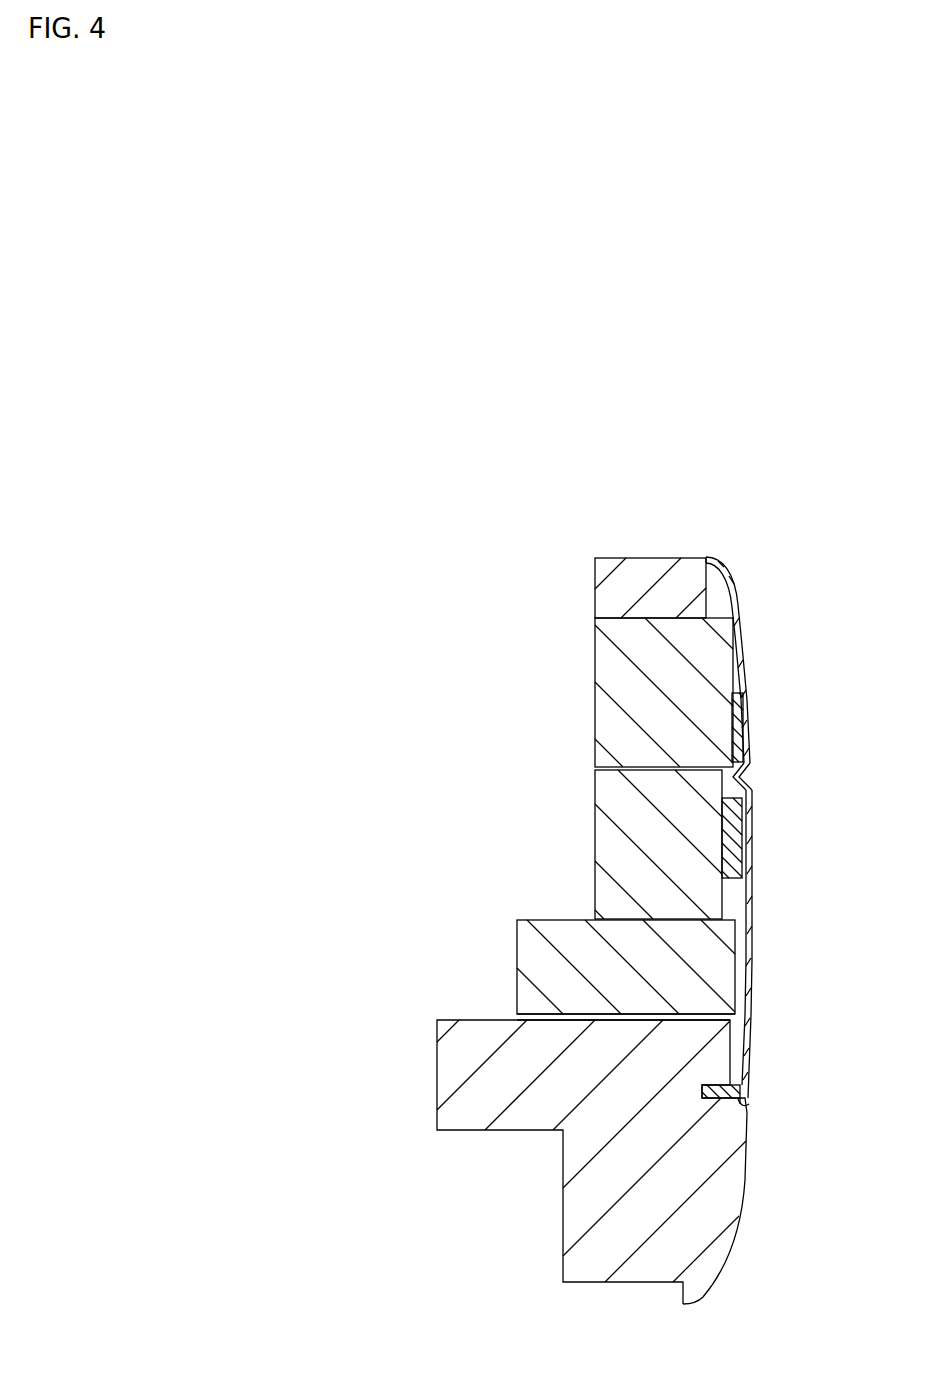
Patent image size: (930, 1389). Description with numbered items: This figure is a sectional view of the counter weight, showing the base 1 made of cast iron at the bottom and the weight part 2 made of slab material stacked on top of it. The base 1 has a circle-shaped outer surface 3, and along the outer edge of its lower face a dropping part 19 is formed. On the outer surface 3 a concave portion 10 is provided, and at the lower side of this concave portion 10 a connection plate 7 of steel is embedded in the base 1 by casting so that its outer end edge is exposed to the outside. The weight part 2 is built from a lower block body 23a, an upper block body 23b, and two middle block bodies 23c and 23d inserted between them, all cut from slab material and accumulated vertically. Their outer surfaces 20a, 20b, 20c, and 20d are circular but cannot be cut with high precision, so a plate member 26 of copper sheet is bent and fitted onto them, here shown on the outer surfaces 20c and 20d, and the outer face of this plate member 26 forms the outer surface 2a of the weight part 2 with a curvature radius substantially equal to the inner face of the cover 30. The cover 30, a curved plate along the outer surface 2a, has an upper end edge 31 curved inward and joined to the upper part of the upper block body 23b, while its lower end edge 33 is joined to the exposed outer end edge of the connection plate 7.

The base made of cast iron 1 is at (538, 1219).
The weight part made of slab material 2 is at (626, 533).
The outer surface of the weight part 2a is at (722, 770).
The outer surface of the base 3 is at (748, 1185).
The connection plate 7 is at (743, 1106).
The concave portion 10 is at (746, 1047).
The dropping part 19 is at (700, 1298).
The outer surface of the lower block body 20a is at (749, 985).
The outer surface of the upper block body 20b is at (707, 593).
The outer surface of the middle block body 20c is at (750, 903).
The outer surface of the middle block body 20d is at (745, 663).
The lower block body 23a is at (528, 957).
The upper block body 23b is at (610, 591).
The middle block body 23c is at (610, 830).
The middle block body 23d is at (610, 693).
The plate member 26 is at (740, 718).
The cover 30 is at (758, 940).
The upper end edge 31 is at (722, 558).
The lower end edge 33 is at (748, 1082).